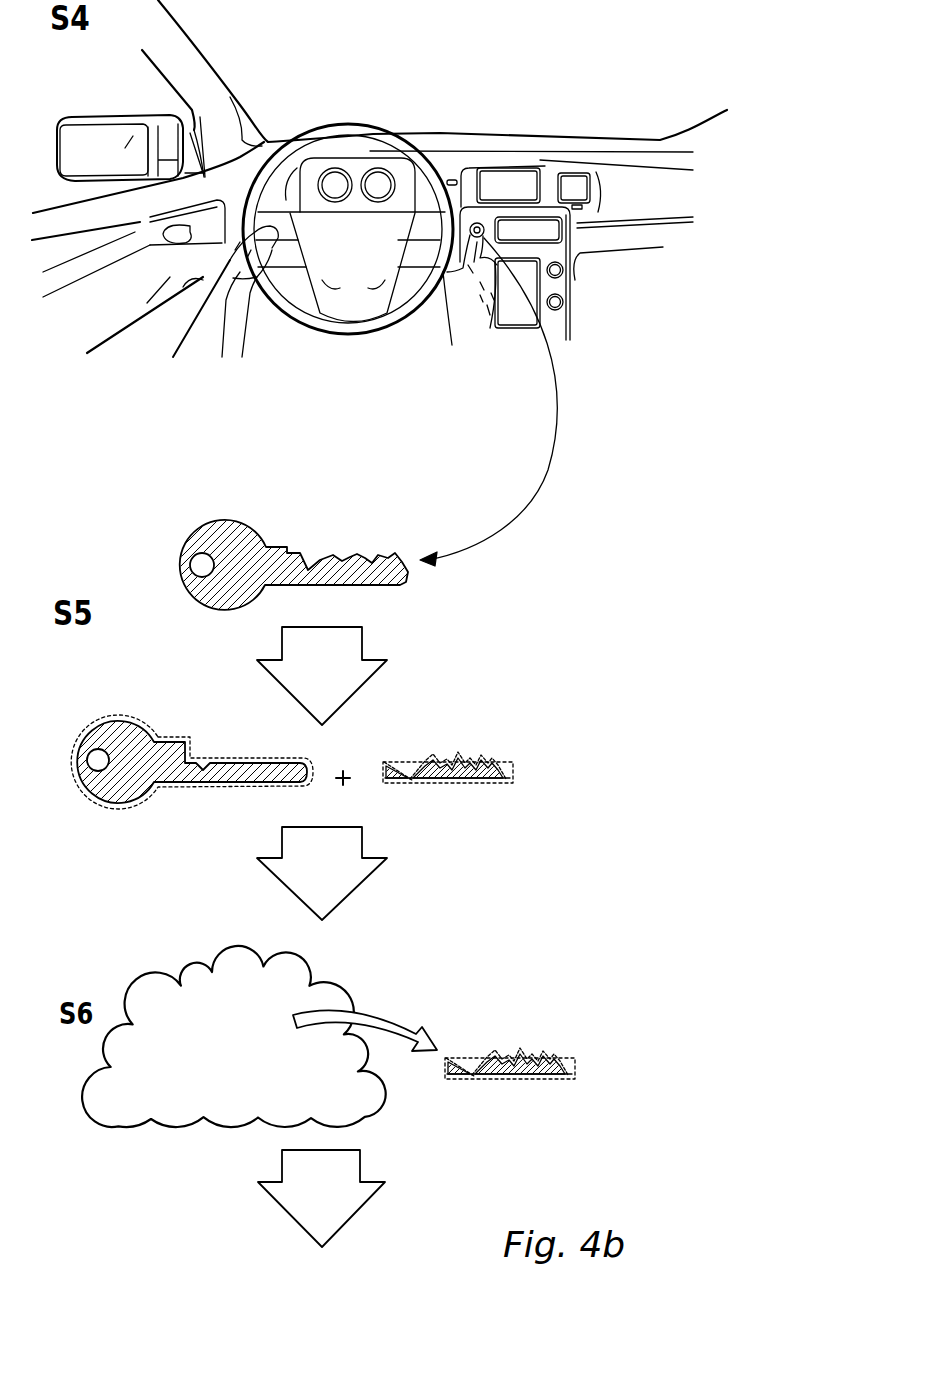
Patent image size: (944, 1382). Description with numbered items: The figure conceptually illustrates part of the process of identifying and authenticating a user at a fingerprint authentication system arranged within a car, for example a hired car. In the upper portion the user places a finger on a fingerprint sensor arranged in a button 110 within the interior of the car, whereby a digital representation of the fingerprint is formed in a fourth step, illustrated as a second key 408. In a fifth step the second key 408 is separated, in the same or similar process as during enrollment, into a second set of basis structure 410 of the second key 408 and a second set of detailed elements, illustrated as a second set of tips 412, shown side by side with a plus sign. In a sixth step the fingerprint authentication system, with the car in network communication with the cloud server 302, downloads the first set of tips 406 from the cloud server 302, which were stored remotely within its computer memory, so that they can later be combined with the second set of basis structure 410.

The key button / input device 110 is at (481, 225).
The second key 408 is at (225, 533).
The second set of basis structure 410 is at (132, 727).
The second set of tips 412 is at (457, 770).
The cloud server 302 is at (165, 988).
The first set of tips 406 is at (510, 1060).